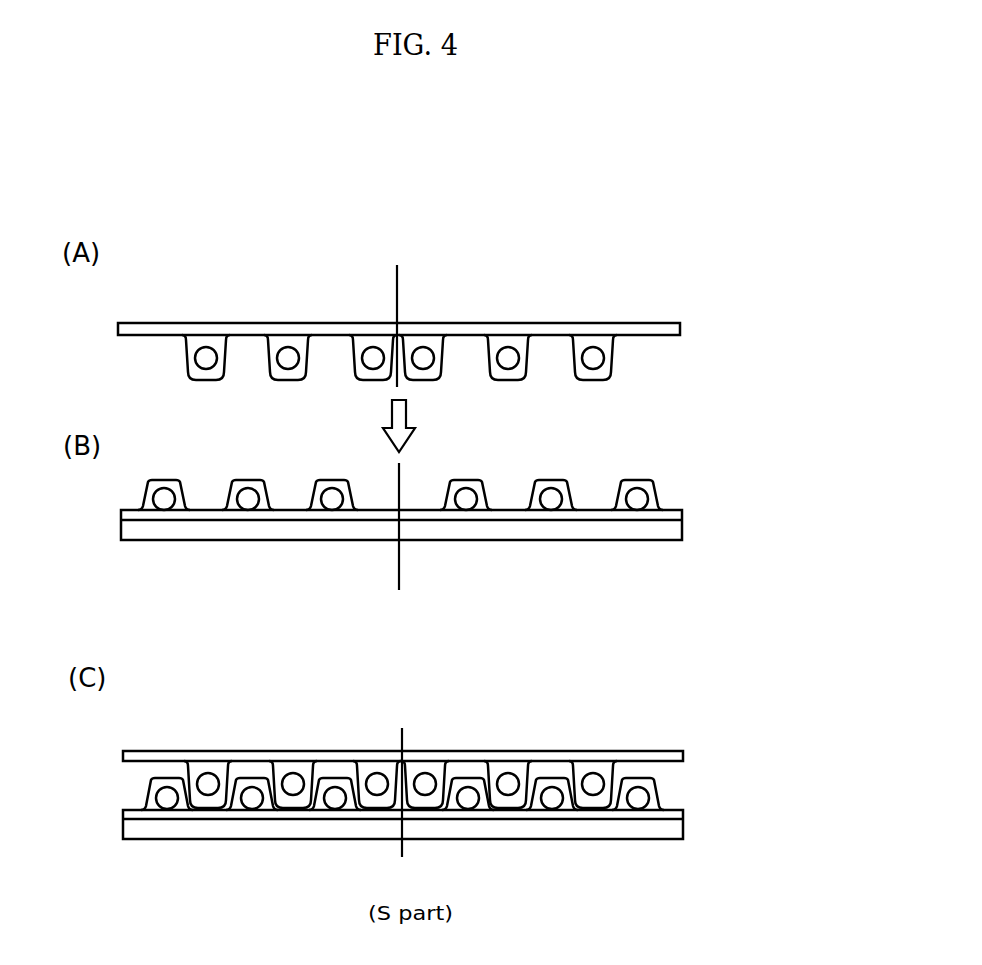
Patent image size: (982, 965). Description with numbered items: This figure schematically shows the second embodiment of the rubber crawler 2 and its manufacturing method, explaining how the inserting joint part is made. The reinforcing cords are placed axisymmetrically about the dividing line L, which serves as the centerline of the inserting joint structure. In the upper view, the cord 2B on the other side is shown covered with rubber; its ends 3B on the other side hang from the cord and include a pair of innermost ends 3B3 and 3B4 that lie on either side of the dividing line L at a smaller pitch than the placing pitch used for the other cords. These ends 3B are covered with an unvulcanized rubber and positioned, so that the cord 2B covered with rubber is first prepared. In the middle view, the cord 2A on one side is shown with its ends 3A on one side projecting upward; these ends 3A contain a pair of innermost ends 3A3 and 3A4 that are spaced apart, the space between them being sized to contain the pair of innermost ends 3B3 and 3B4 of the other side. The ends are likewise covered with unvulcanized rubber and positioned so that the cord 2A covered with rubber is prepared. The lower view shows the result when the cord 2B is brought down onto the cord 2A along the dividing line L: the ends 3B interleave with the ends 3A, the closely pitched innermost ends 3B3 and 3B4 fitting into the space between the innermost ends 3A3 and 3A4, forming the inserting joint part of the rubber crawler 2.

The rubber crawler 2 is at (677, 800).
The cord on one side 2A is at (442, 489).
The cord on the other side 2B is at (425, 347).
The ends on one side 3A is at (509, 664).
The ends on the other side 3B is at (465, 540).
The innermost end on one side 3A3 is at (332, 498).
The innermost end on one side 3A4 is at (466, 499).
The innermost end on the other side 3B3 is at (373, 360).
The innermost end on the other side 3B4 is at (424, 360).
The dividing line L is at (398, 276).